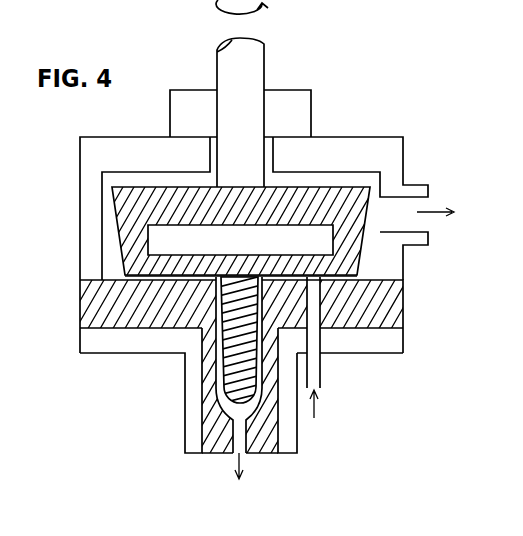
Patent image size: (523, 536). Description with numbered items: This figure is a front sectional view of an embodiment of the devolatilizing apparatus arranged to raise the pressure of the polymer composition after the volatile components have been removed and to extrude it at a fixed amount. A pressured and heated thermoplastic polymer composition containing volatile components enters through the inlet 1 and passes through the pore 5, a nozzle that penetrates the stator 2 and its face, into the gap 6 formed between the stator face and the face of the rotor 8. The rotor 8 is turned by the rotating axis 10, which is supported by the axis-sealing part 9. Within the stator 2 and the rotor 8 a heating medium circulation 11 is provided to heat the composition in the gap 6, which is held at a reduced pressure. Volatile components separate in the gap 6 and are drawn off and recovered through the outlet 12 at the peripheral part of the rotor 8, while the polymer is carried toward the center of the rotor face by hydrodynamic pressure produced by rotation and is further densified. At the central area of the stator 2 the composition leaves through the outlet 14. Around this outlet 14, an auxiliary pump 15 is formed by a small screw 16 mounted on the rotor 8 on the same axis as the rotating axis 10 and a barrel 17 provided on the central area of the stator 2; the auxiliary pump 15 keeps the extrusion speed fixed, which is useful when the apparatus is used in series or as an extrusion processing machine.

The inlet 1 is at (315, 417).
The stator 2 is at (378, 305).
The pore (nozzle) 5 is at (312, 300).
The gap 6 is at (230, 245).
The rotor 8 is at (345, 203).
The axis-sealing part 9 is at (295, 117).
The rotating axis 10 is at (242, 80).
The heating medium circulation 11 is at (120, 342).
The outlet 12 is at (452, 213).
The outlet 14 is at (241, 478).
The auxiliary pump 15 is at (214, 374).
The small screw 16 is at (238, 323).
The barrel 17 is at (222, 442).